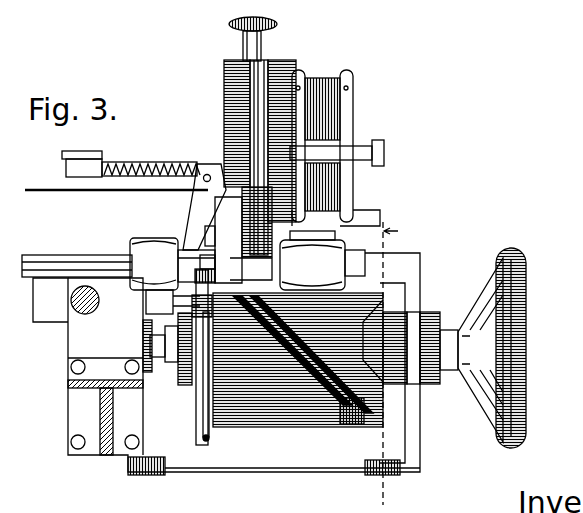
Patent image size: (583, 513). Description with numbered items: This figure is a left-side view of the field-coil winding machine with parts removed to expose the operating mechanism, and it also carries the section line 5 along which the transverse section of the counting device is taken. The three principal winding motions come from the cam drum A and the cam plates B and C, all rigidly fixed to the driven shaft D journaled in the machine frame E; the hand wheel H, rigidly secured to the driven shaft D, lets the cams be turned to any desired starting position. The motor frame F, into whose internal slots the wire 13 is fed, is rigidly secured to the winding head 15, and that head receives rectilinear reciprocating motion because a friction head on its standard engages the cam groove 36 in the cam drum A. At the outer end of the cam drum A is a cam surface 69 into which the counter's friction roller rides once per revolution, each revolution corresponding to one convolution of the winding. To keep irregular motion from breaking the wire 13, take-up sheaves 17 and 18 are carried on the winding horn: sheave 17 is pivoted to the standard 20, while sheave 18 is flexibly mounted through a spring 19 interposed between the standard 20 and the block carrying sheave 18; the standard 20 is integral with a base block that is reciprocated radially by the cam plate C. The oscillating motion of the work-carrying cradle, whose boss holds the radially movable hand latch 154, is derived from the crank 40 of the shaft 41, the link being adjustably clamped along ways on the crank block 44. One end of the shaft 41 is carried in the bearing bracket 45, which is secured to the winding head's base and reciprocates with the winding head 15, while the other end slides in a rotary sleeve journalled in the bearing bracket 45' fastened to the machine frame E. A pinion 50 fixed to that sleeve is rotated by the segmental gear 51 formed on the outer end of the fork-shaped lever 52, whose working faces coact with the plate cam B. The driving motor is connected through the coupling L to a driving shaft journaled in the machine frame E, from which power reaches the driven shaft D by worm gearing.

The hand latch or grabbing member 154 is at (240, 48).
The winding head 15 is at (222, 73).
The motor frame F is at (337, 139).
The take-up sheave 18 is at (96, 153).
The spring 19 is at (137, 161).
The wire 13 is at (46, 192).
The take-up sheave 17 is at (222, 163).
The standard 20 is at (225, 213).
The crank block 44 is at (199, 234).
The pinion 50 is at (214, 265).
The shaft 41 is at (35, 256).
The bearing bracket 45' is at (172, 264).
The bearing bracket 45 is at (322, 260).
The machine frame E is at (254, 470).
The coupling L is at (91, 314).
The segmental gear 51 is at (173, 302).
The driven shaft D is at (160, 358).
The cam plate C is at (185, 386).
The cam plate B is at (200, 400).
The fork-shaped lever 52 is at (209, 440).
The cam drum A is at (278, 432).
The crank 40 is at (240, 305).
The cam surface 69 is at (366, 337).
The cam groove 36 is at (354, 424).
The hand wheel H is at (527, 346).
The section line 5 is at (389, 362).